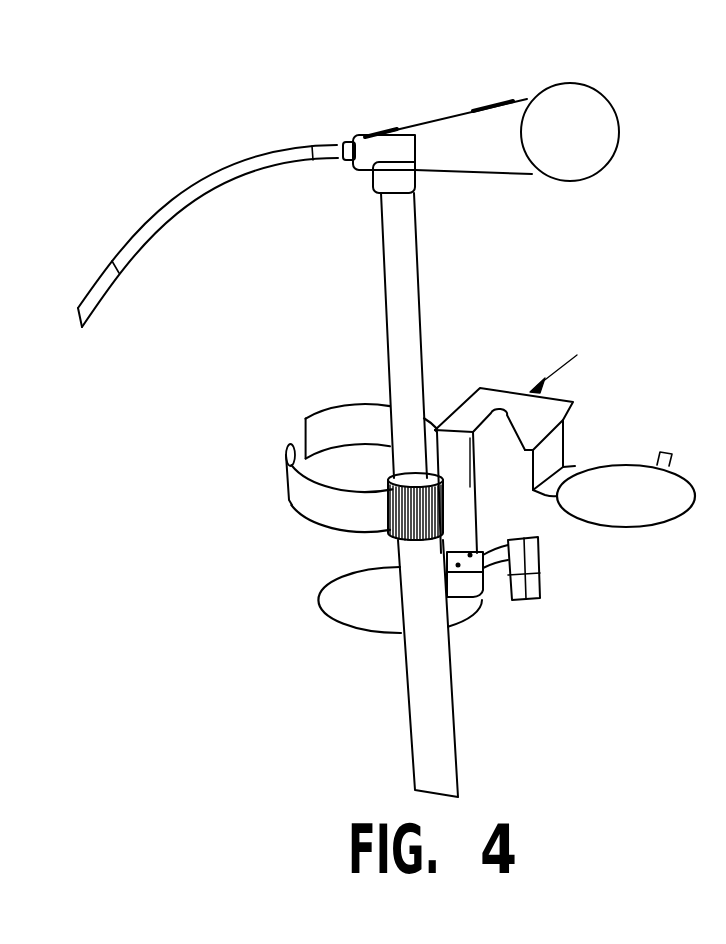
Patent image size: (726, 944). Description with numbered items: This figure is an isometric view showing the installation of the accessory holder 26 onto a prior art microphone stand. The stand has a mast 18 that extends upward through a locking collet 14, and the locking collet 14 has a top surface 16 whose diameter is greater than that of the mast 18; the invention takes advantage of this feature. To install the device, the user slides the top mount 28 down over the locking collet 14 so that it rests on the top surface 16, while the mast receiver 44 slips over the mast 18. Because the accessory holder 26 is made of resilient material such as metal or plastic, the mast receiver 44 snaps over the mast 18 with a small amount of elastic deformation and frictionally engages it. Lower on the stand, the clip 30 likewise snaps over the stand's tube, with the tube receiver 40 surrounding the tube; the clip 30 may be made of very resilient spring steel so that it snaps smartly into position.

The locking collet 14 is at (393, 533).
The top surface 16 is at (390, 480).
The mast 18 is at (397, 325).
The accessory holder 26 is at (605, 570).
The top mount 28 is at (539, 429).
The clip 30 is at (468, 587).
The tube receiver 40 is at (498, 583).
The mast receiver 44 is at (500, 421).